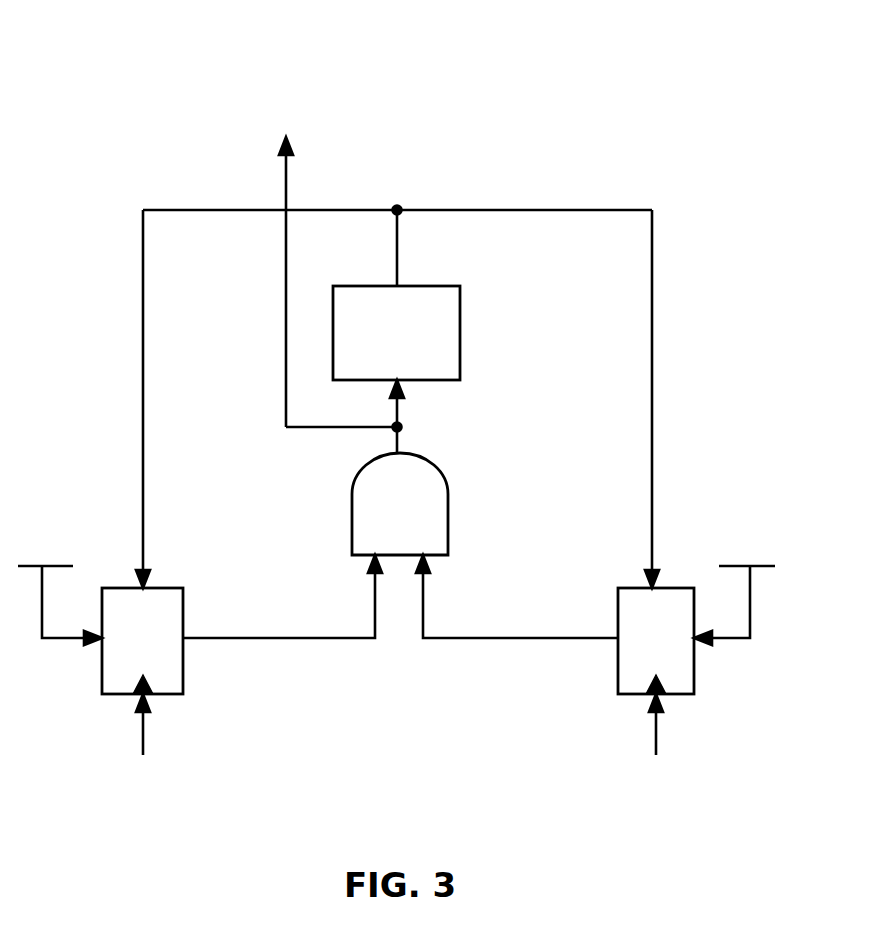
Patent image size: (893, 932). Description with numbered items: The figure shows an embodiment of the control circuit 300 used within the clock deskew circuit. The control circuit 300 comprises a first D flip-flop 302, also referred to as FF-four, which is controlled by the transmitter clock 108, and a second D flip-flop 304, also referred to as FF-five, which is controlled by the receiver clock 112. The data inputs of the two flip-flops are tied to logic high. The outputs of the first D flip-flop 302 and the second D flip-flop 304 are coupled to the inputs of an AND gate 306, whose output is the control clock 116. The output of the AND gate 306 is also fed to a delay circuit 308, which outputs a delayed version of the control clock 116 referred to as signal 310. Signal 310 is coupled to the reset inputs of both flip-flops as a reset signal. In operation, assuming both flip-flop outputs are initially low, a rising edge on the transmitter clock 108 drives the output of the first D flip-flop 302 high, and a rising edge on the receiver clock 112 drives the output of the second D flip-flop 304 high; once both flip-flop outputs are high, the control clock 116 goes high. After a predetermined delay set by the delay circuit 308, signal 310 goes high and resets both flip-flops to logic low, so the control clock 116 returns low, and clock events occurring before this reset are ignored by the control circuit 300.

The control circuit 300 is at (524, 31).
The control clock 116 is at (287, 257).
The signal 310 is at (439, 248).
The delay circuit 308 is at (396, 356).
The AND gate 306 is at (400, 504).
The first D flip-flop 302 is at (183, 588).
The second D flip-flop 304 is at (618, 588).
The transmitter clock 108 is at (143, 762).
The receiver clock 112 is at (656, 762).